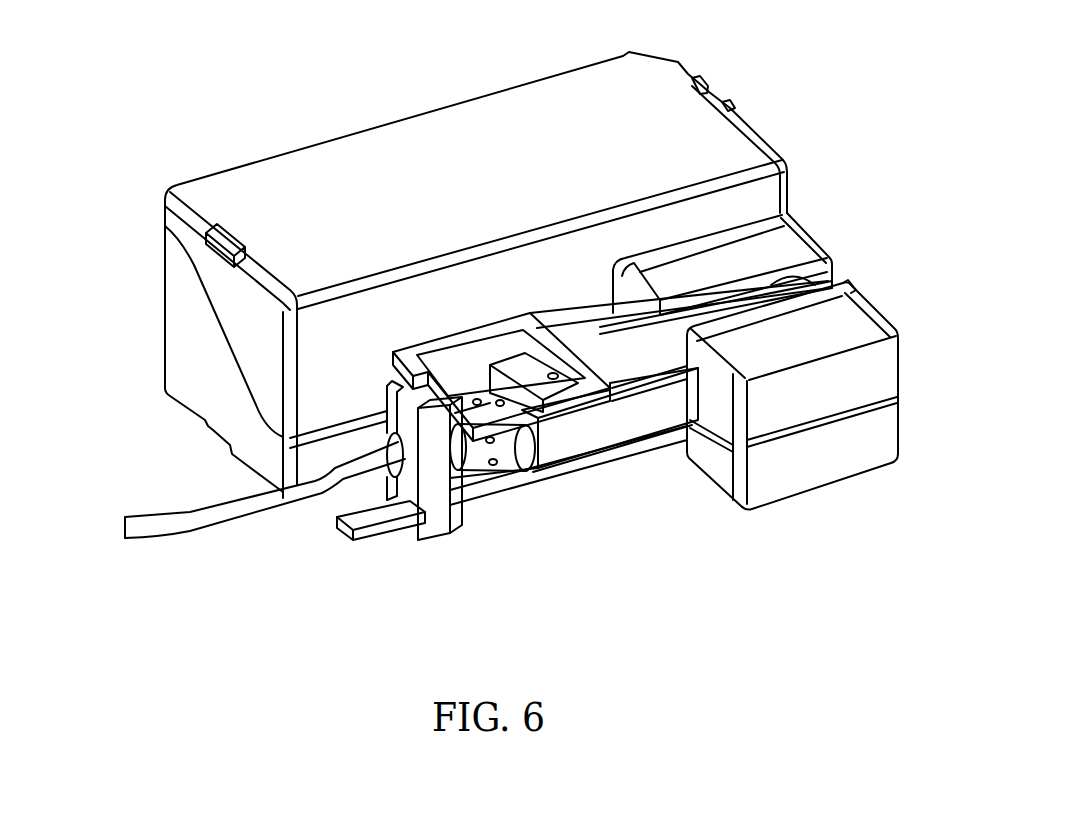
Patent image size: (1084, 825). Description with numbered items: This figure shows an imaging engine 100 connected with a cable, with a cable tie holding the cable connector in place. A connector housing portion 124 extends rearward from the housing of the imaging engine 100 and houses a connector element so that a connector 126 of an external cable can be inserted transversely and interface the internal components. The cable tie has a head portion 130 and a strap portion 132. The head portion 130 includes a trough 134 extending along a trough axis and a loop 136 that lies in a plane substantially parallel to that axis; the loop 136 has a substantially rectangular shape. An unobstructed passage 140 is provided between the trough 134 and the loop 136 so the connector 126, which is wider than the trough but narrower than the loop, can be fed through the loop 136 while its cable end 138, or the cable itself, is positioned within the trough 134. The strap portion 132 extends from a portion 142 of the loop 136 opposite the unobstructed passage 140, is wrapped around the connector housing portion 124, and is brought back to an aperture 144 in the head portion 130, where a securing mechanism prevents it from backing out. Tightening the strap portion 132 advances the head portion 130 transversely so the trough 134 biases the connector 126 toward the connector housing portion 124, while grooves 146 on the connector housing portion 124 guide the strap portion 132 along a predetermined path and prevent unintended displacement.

The imaging engine 100 is at (238, 112).
The connector housing portion 124 is at (852, 270).
The connector 126 is at (635, 420).
The head portion 130 is at (396, 316).
The strap portion 132 is at (524, 512).
The trough 134 is at (378, 435).
The loop 136 is at (469, 312).
The cable end 138 is at (404, 490).
The unobstructed passage 140 is at (405, 395).
The portion of the loop 142 is at (565, 328).
The aperture 144 is at (422, 515).
The grooves 146 is at (782, 258).